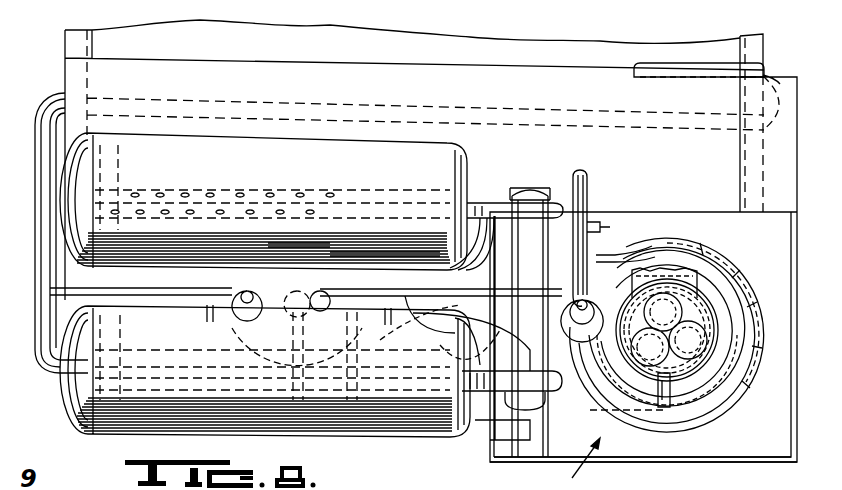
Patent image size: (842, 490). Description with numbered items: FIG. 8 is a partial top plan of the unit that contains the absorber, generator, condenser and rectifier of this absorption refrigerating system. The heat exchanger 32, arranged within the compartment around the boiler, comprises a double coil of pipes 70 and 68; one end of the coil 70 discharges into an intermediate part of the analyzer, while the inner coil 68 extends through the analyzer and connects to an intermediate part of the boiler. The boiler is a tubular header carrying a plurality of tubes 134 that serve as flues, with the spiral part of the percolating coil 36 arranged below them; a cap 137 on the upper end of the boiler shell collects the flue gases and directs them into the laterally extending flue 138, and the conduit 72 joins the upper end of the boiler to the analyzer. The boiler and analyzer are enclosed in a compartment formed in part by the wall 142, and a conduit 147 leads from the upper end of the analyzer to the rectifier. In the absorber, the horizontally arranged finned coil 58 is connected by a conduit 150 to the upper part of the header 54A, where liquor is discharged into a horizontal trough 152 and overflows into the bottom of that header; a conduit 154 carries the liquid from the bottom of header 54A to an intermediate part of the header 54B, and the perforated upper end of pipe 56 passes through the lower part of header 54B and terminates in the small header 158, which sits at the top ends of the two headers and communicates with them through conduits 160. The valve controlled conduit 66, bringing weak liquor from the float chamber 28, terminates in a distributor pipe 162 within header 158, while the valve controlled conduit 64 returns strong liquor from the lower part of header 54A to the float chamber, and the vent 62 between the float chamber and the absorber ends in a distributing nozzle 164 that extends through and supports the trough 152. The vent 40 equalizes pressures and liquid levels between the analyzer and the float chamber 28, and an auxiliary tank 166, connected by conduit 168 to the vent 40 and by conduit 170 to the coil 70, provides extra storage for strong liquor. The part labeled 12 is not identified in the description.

The heat exchanger unit 12 is at (212, 292).
The float chamber 28 is at (296, 195).
The heat exchanger 32 is at (578, 461).
The percolating coil 36 is at (748, 292).
The vent 40 is at (442, 330).
The header 54A is at (152, 415).
The header 54B is at (370, 140).
The pipe 56 is at (240, 195).
The finned coil 58 is at (710, 70).
The vent 62 is at (118, 236).
The valve controlled conduit 64 is at (279, 338).
The valve controlled conduit 66 is at (525, 426).
The inner coil 68 is at (300, 243).
The coil 70 is at (765, 385).
The conduit 72 is at (648, 343).
The tubes 134 is at (730, 258).
The cap 137 is at (748, 401).
The flue 138 is at (673, 268).
The wall 142 is at (600, 462).
The conduit 147 is at (592, 183).
The conduit 150 is at (62, 178).
The horizontal trough 152 is at (378, 440).
The conduit 154 is at (182, 256).
The small header 158 is at (544, 190).
The conduits 160 is at (532, 188).
The distributor pipe 162 is at (590, 226).
The distributing nozzle 164 is at (195, 346).
The auxiliary reservoir 166 is at (437, 200).
The conduit 168 is at (455, 338).
The conduit 170 is at (410, 292).